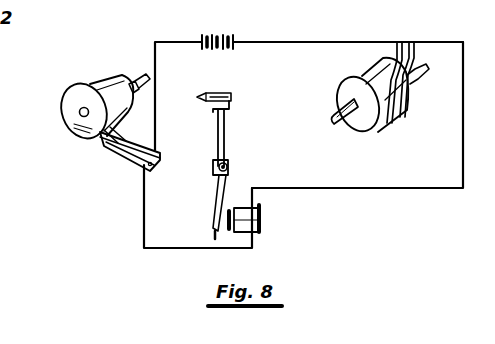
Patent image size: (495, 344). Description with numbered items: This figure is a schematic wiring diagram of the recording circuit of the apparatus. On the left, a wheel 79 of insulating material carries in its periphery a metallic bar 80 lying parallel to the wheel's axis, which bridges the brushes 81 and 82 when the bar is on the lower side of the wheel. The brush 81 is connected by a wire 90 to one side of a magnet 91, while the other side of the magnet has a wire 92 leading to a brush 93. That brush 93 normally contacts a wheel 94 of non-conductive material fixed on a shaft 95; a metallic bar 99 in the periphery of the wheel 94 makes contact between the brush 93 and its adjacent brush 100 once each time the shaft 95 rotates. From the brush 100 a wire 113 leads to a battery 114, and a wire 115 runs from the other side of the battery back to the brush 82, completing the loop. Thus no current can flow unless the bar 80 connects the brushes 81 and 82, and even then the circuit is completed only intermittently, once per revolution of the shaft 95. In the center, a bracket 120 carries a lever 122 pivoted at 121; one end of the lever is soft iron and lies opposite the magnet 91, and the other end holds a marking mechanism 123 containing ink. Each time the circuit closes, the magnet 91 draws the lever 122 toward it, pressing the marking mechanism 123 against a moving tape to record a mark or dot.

The wheel 79 is at (86, 89).
The metallic bar 80 is at (107, 82).
The brush 81 is at (122, 153).
The brush 82 is at (137, 149).
The wire 90 is at (183, 248).
The magnet 91 is at (262, 218).
The wire 92 is at (381, 188).
The brush 93 is at (416, 40).
The wheel 94 is at (342, 96).
The shaft 95 is at (333, 121).
The metallic bar 99 is at (372, 76).
The brush 100 is at (398, 42).
The wire 113 is at (321, 41).
The battery 114 is at (218, 33).
The wire 115 is at (186, 41).
The bracket 120 is at (213, 170).
The pivot 121 is at (229, 169).
The lever 122 is at (230, 135).
The marking mechanism 123 is at (214, 104).